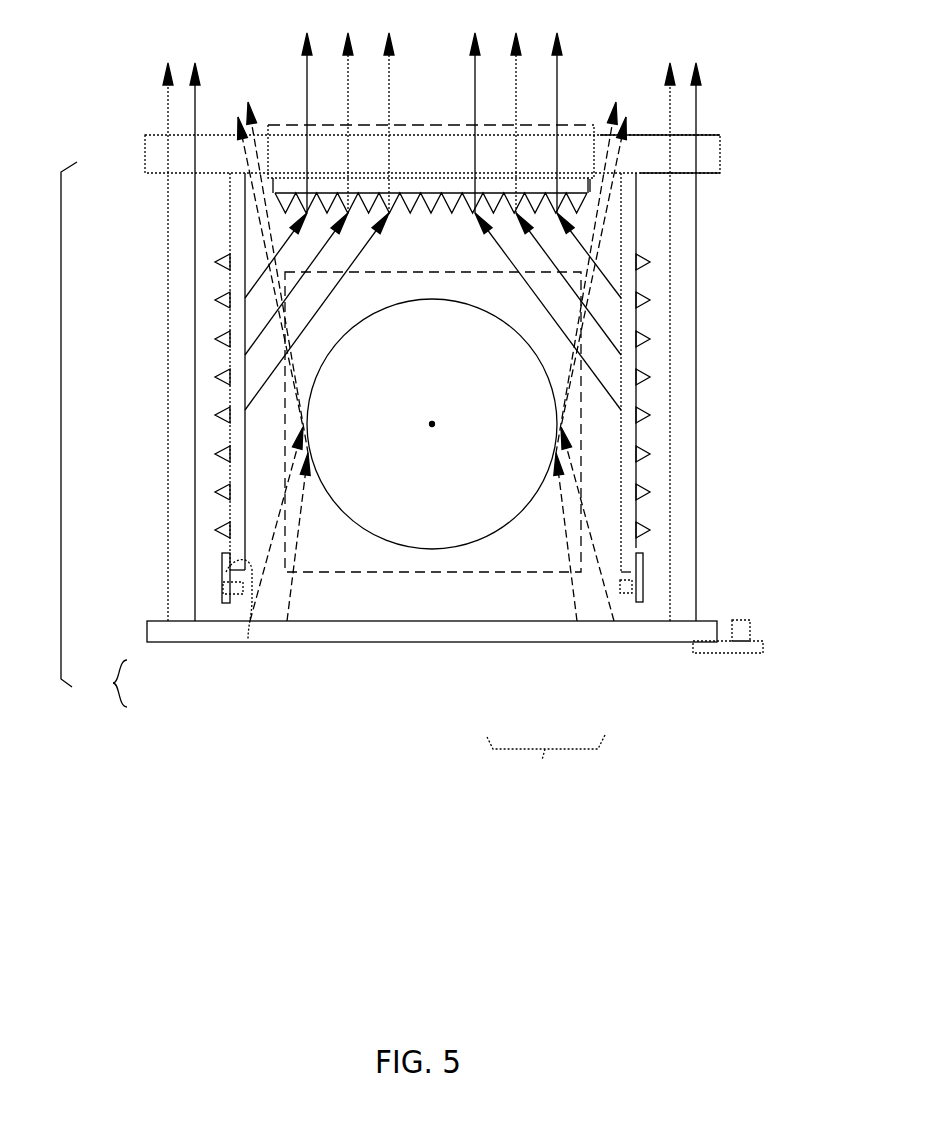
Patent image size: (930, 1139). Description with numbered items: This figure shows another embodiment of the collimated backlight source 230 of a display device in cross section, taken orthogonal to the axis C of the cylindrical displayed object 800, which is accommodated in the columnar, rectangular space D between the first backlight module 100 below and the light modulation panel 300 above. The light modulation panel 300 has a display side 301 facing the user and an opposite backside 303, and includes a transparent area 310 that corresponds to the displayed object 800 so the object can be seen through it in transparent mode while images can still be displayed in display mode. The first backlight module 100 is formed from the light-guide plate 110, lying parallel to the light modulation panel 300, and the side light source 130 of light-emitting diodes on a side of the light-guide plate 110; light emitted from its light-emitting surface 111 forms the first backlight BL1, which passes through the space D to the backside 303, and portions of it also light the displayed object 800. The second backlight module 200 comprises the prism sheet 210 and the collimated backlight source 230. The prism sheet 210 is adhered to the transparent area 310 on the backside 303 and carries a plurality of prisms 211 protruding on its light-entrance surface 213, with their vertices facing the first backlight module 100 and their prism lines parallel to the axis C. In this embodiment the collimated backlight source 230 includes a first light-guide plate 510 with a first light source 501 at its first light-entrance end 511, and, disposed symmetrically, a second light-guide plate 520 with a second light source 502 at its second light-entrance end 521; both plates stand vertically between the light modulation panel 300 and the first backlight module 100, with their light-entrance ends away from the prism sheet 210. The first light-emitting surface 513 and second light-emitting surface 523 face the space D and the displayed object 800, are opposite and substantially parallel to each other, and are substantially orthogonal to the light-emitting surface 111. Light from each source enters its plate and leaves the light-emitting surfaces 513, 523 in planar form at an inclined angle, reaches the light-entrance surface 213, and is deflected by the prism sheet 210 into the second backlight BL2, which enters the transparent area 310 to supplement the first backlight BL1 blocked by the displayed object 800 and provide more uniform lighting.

The first backlight module 100 is at (546, 762).
The light-guide plate 110 is at (479, 627).
The light-emitting surface 111 is at (708, 620).
The side light source 130 is at (740, 632).
The second backlight module 200 is at (319, 424).
The prism sheet 210 is at (282, 183).
The prisms 211 is at (567, 198).
The light-entrance surface 213 is at (537, 193).
The collimated backlight source 230 is at (101, 683).
The light modulation panel 300 is at (705, 158).
The display side 301 is at (678, 135).
The backside 303 is at (705, 173).
The transparent area 310 is at (283, 125).
The first light source 501 is at (225, 603).
The second light source 502 is at (626, 593).
The first light-guide plate 510 is at (237, 472).
The first light-entrance end 511 is at (235, 594).
The first light-emitting surface 513 is at (248, 640).
The second light-guide plate 520 is at (626, 540).
The second light-entrance end 521 is at (639, 602).
The second light-emitting surface 523 is at (622, 482).
The displayed object 800 is at (473, 518).
The axis C is at (434, 409).
The columnar space D is at (418, 549).
The first backlight BL1 is at (168, 265).
The second backlight BL2 is at (303, 95).